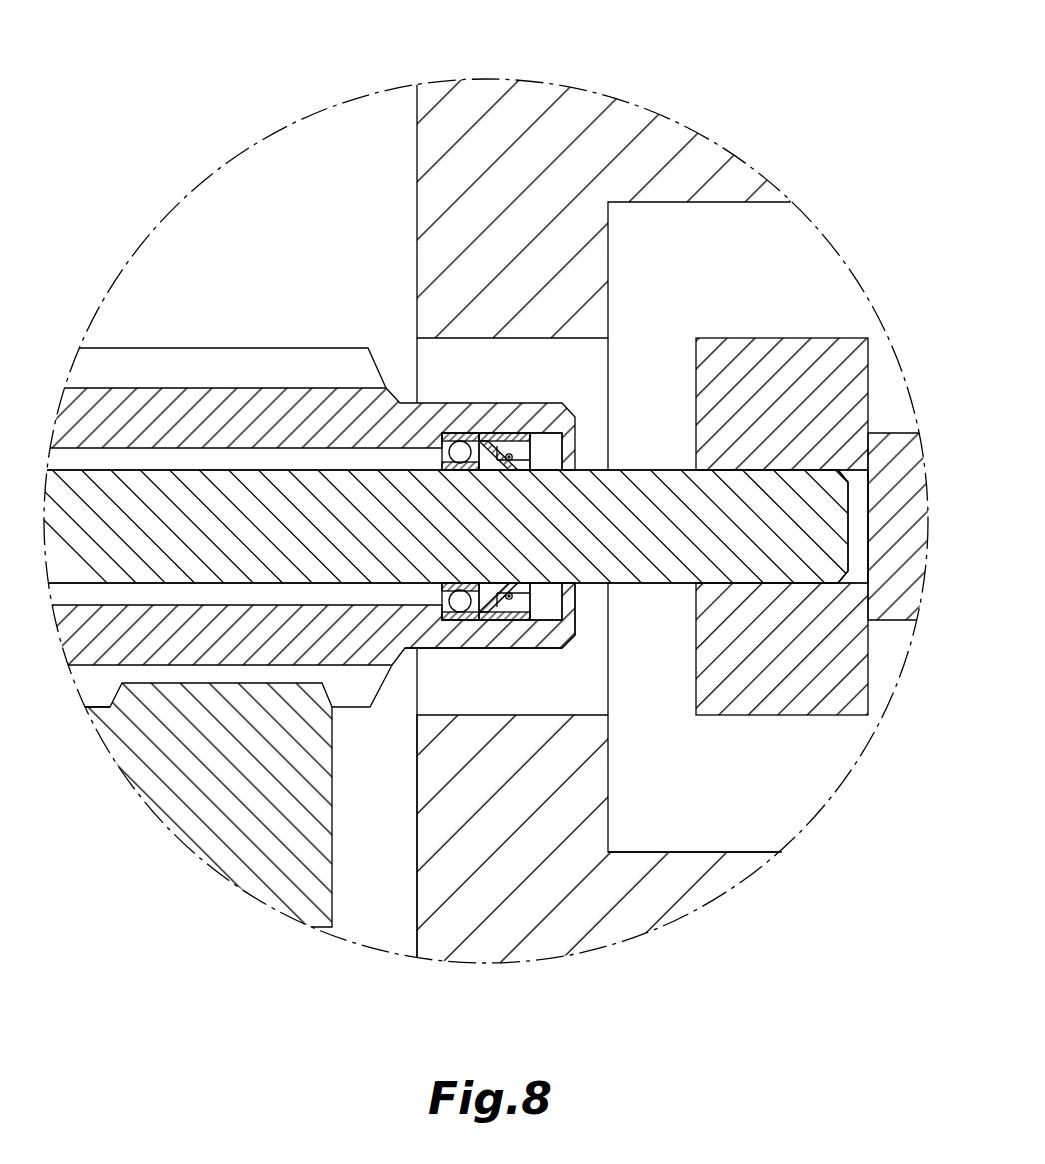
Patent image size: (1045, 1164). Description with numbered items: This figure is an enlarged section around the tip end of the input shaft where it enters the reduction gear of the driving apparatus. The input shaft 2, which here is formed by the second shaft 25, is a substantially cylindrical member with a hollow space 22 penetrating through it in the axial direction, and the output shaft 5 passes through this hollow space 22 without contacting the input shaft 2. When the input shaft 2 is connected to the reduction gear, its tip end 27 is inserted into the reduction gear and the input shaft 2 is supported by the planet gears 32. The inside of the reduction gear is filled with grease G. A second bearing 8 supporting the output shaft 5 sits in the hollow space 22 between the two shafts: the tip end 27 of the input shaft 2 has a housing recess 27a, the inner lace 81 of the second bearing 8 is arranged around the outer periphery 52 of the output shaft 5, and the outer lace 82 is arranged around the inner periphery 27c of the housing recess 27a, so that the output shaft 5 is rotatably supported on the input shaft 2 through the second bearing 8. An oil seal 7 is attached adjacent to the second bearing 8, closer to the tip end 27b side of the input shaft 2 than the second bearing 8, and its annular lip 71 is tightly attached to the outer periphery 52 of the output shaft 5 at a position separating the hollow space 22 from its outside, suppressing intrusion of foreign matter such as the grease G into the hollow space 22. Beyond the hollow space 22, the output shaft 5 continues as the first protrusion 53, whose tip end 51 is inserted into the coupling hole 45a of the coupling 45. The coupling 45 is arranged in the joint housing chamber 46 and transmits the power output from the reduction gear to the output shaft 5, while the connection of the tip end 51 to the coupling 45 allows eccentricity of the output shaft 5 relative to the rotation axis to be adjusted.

The output shaft 5 is at (148, 525).
The input shaft 2 is at (160, 640).
The hollow space 22 is at (133, 592).
The second shaft 25 is at (213, 640).
The planet gears 32 is at (253, 830).
The tip end of the input shaft 27 is at (547, 641).
The housing recess 27a is at (548, 450).
The tip end side 27b is at (578, 636).
The inner periphery of the housing recess 27c is at (553, 608).
The second bearing 8 is at (462, 607).
The inner lace 81 is at (443, 463).
The outer lace 82 is at (474, 440).
The oil seal 7 is at (516, 622).
The lip 71 is at (513, 597).
The outer periphery of the output shaft 52 is at (558, 457).
The first protrusion 53 is at (680, 495).
The tip end of the output shaft 51 is at (778, 515).
The coupling 45 is at (787, 683).
The coupling hole 45a is at (860, 565).
The joint housing chamber 46 is at (735, 807).
The grease G is at (371, 878).